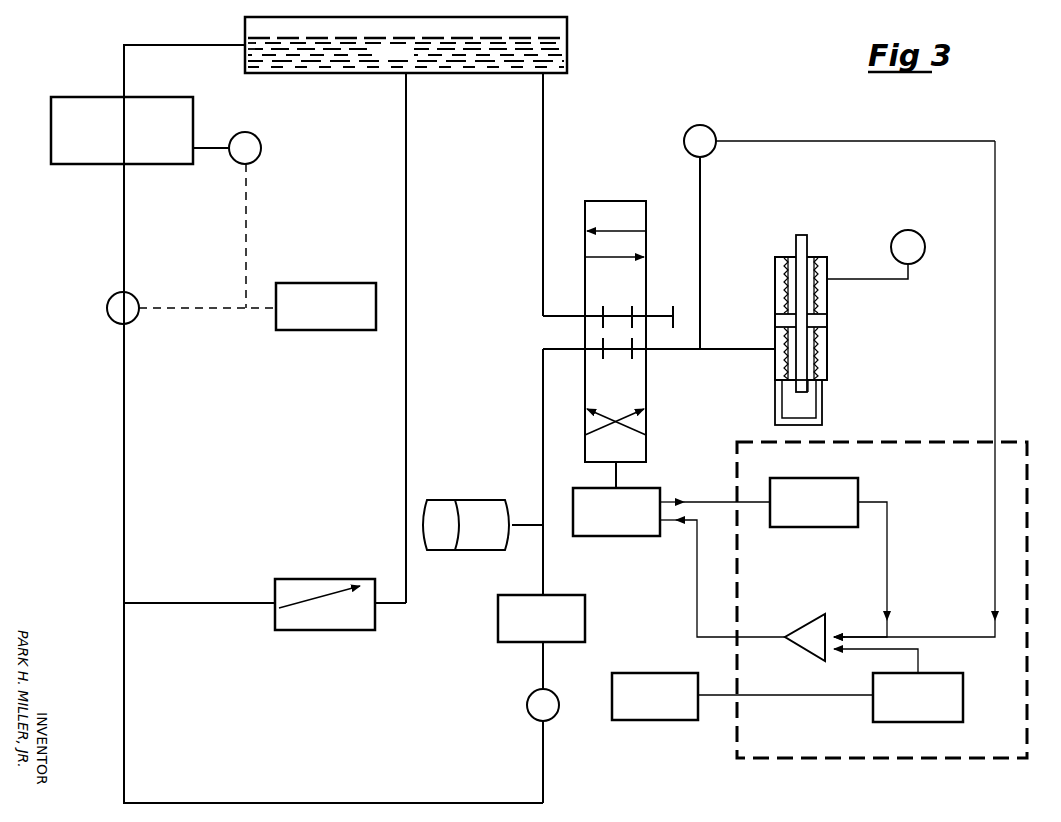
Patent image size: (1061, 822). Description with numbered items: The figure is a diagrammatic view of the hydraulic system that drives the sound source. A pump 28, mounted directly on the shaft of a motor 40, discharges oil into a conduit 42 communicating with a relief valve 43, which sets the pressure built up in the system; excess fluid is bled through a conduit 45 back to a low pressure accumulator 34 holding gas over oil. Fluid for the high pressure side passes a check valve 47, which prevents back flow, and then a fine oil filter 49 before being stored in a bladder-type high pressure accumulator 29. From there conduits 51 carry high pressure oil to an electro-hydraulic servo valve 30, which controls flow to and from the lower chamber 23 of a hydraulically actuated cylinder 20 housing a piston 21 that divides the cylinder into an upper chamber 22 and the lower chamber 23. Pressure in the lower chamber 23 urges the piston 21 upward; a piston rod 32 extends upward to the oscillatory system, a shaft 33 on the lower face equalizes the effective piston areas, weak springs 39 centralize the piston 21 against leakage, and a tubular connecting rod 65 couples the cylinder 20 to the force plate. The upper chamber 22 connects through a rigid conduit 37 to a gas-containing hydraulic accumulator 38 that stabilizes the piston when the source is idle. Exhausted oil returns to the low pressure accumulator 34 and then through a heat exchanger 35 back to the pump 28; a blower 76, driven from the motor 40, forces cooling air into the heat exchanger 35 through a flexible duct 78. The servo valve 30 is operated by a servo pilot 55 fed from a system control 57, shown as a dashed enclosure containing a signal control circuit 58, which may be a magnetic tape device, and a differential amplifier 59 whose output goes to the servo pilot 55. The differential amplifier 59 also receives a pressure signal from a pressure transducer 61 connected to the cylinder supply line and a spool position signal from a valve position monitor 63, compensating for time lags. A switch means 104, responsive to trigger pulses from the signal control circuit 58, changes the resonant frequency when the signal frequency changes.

The hydraulically actuated cylinder 20 is at (805, 327).
The piston 21 is at (828, 320).
The upper chamber 22 is at (828, 270).
The lower chamber 23 is at (828, 340).
The pump 28 is at (136, 296).
The high pressure accumulator 29 is at (440, 551).
The servo valve 30 is at (636, 248).
The piston rod 32 is at (808, 242).
The shaft 33 is at (812, 386).
The low pressure accumulator 34 is at (568, 22).
The heat exchanger 35 is at (195, 108).
The rigid conduit 37 is at (893, 281).
The hydraulic accumulator 38 is at (924, 240).
The springs 39 is at (781, 288).
The motor 40 is at (340, 283).
The conduit 42 is at (125, 462).
The relief valve 43 is at (315, 579).
The conduit 45 is at (407, 372).
The check valve 47 is at (557, 695).
The fine oil filter 49 is at (586, 617).
The conduits 51 is at (542, 428).
The servo pilot 55 is at (642, 487).
The system control 57 is at (1002, 440).
The signal control circuit 58 is at (964, 693).
The differential amplifier 59 is at (828, 622).
The pressure transducer 61 is at (712, 155).
The valve position monitor circuit 63 is at (859, 487).
The connecting rod 65 is at (823, 421).
The blower 76 is at (262, 140).
The flexible duct 78 is at (208, 150).
The switch means 104 is at (632, 722).